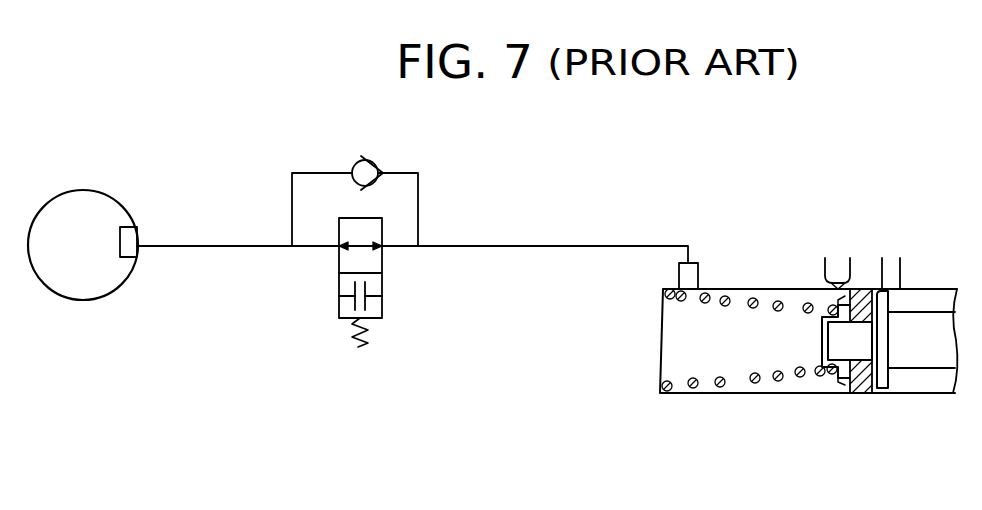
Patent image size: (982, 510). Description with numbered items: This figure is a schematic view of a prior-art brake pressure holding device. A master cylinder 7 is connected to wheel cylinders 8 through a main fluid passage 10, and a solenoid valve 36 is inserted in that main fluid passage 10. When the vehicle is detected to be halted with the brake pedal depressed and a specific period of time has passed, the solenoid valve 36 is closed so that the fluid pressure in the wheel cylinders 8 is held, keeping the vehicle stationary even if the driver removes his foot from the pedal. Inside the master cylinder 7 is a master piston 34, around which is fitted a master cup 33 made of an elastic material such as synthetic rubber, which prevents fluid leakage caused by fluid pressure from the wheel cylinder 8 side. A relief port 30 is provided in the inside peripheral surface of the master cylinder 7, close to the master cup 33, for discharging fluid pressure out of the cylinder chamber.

The wheel cylinder 8 is at (128, 240).
The main fluid passage 10 is at (558, 246).
The solenoid valve 36 is at (383, 263).
The master cylinder 7 is at (755, 289).
The relief port 30 is at (830, 289).
The master piston 34 is at (857, 338).
The master cup 33 is at (865, 395).